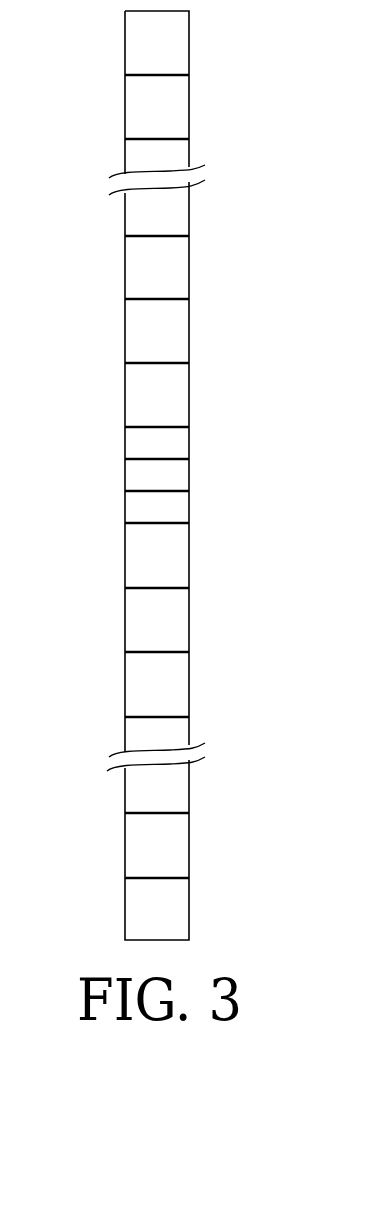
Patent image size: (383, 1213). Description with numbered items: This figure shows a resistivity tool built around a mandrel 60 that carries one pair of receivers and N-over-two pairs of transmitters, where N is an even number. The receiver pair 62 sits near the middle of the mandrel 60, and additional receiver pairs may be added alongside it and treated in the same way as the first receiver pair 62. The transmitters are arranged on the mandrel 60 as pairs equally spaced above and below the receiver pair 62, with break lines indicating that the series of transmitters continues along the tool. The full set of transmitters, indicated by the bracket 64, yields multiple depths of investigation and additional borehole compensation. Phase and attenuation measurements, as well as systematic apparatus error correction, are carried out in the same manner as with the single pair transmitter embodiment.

The mandrel 60 is at (206, 475).
The receiver pair 62 is at (215, 475).
The normal rows 64 is at (167, 475).